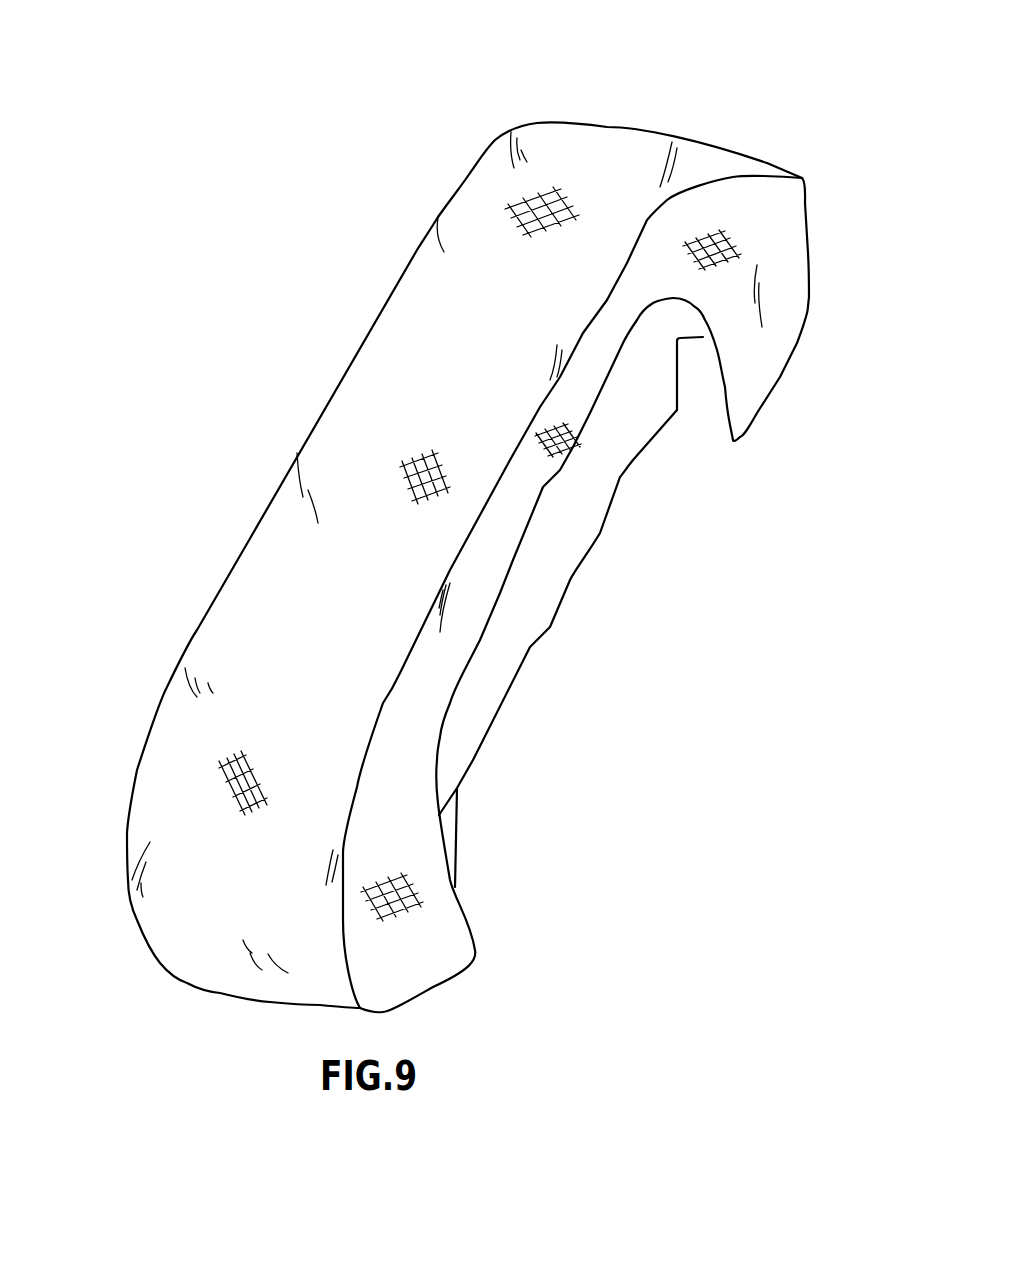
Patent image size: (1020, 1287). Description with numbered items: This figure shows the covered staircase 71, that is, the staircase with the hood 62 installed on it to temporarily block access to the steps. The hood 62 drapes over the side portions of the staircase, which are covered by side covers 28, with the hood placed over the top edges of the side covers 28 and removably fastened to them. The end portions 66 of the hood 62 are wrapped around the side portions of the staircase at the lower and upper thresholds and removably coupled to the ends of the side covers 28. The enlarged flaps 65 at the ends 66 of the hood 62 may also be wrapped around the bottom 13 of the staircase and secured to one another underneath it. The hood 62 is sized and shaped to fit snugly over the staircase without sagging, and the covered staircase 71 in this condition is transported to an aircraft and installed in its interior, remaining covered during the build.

The covered staircase 71 is at (292, 365).
The end portions 66 is at (578, 138).
The hood 62 is at (383, 338).
The enlarged flaps 65 is at (762, 362).
The side covers 28 is at (513, 637).
The bottom 13 is at (650, 440).